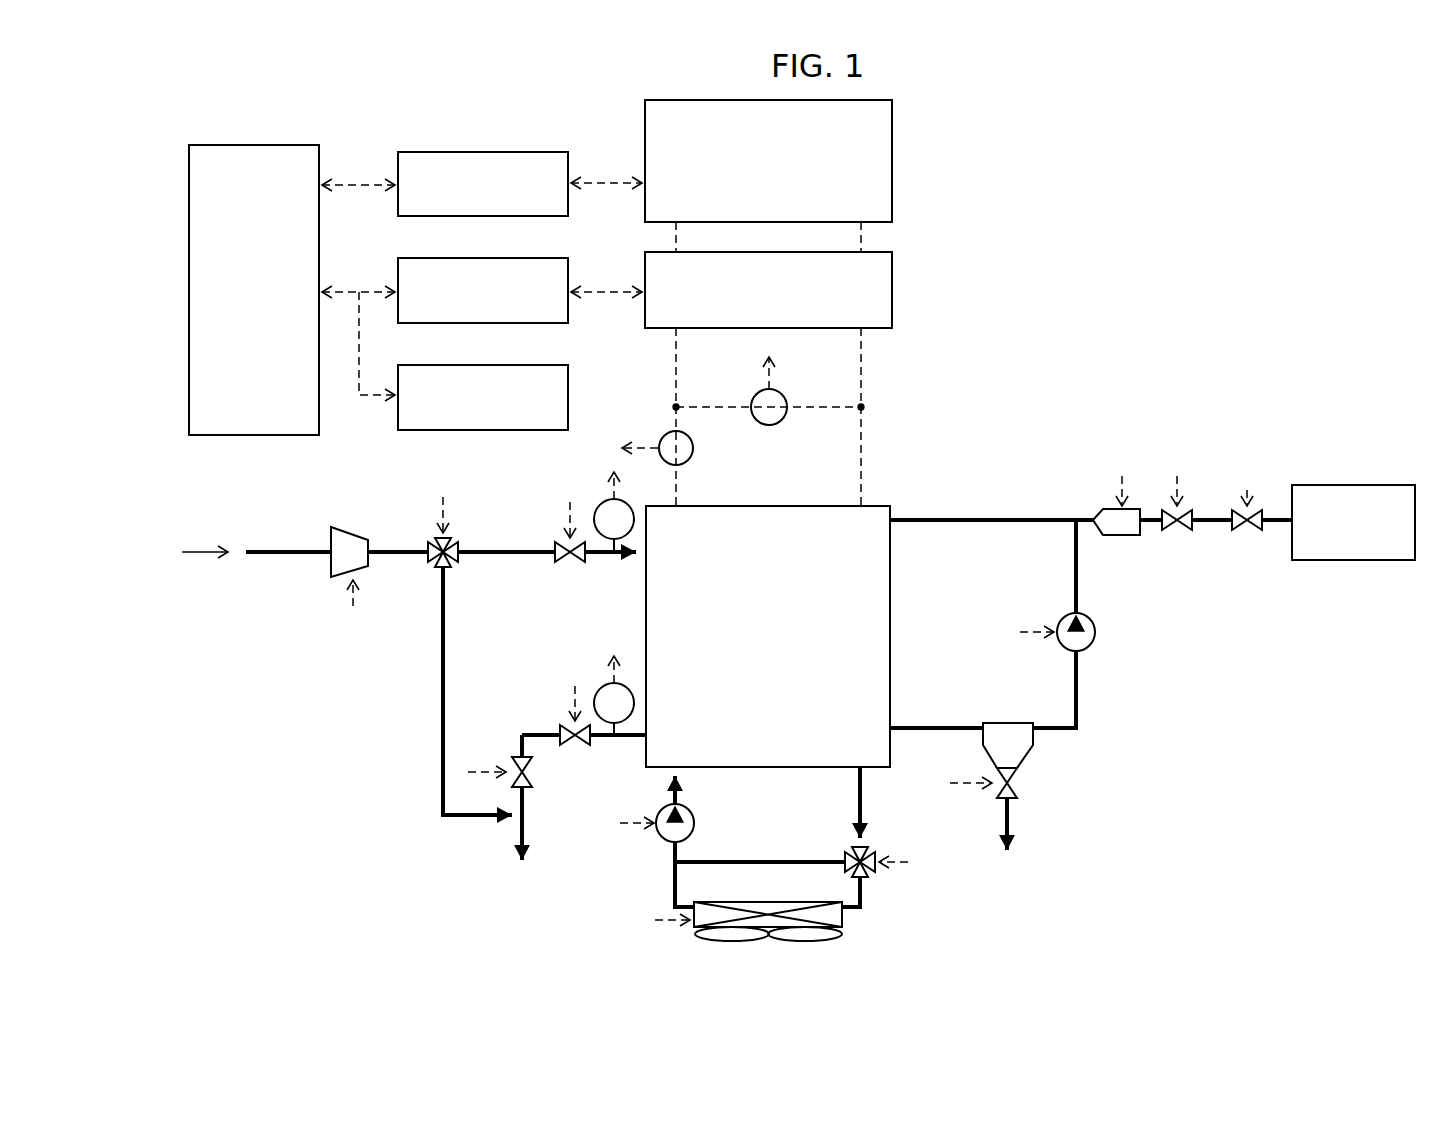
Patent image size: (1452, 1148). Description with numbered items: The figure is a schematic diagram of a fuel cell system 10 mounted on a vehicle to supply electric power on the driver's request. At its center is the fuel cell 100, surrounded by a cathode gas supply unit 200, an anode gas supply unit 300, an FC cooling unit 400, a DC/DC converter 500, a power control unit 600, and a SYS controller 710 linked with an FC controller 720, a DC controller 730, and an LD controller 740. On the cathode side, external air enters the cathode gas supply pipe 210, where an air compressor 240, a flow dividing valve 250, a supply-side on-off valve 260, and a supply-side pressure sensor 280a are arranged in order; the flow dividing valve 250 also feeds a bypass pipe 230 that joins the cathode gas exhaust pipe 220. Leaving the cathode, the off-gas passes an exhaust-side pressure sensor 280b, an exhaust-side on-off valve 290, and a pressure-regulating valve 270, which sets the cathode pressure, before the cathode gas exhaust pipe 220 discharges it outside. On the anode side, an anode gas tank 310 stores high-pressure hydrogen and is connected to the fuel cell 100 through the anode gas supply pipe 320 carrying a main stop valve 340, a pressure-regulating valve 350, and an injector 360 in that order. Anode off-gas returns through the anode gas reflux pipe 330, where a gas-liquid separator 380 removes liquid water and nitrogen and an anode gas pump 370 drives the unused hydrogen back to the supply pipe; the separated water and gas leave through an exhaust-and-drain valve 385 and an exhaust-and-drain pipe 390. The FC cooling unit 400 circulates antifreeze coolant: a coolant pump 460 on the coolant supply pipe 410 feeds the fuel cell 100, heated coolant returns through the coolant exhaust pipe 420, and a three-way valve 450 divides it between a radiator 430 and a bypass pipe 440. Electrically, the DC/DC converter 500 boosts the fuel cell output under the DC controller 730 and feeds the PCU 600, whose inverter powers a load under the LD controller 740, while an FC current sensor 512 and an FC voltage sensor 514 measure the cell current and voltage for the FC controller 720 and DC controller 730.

The fuel cell system 10 is at (1276, 158).
The fuel cell 100 is at (770, 505).
The cathode gas supply unit 200 is at (330, 792).
The cathode gas supply pipe 210 is at (288, 557).
The cathode gas exhaust pipe 220 is at (520, 840).
The bypass pipe 230 is at (443, 752).
The air compressor 240 is at (355, 527).
The flow dividing valve 250 is at (437, 566).
The supply-side on-off valve 260 is at (549, 562).
The pressure-regulating valve 270 is at (515, 760).
The supply-side pressure sensor 280a is at (600, 506).
The exhaust-side pressure sensor 280b is at (598, 690).
The exhaust-side on-off valve 290 is at (586, 746).
The anode gas supply unit 300 is at (1258, 762).
The anode gas tank 310 is at (1350, 562).
The anode gas supply pipe 320 is at (950, 518).
The anode gas reflux pipe 330 is at (932, 726).
The main stop valve 340 is at (1258, 508).
The pressure-regulating valve 350 is at (1192, 508).
The injector 360 is at (1103, 508).
The anode gas pump 370 is at (1064, 617).
The gas-liquid separator 380 is at (1005, 722).
The exhaust-and-drain valve 385 is at (998, 771).
The exhaust-and-drain pipe 390 is at (1010, 815).
The FC cooling unit 400 is at (628, 918).
The coolant supply pipe 410 is at (675, 885).
The coolant exhaust pipe 420 is at (862, 802).
The radiator 430 is at (843, 926).
The bypass pipe 440 is at (768, 860).
The three-way valve 450 is at (849, 855).
The coolant pump 460 is at (715, 809).
The DC/DC converter 500 is at (893, 296).
The FC current sensor 512 is at (694, 448).
The FC voltage sensor 514 is at (783, 394).
The power control unit 600 is at (645, 125).
The SYS controller 710 is at (263, 147).
The FC controller 720 is at (479, 365).
The DC controller 730 is at (479, 258).
The LD controller 740 is at (479, 152).